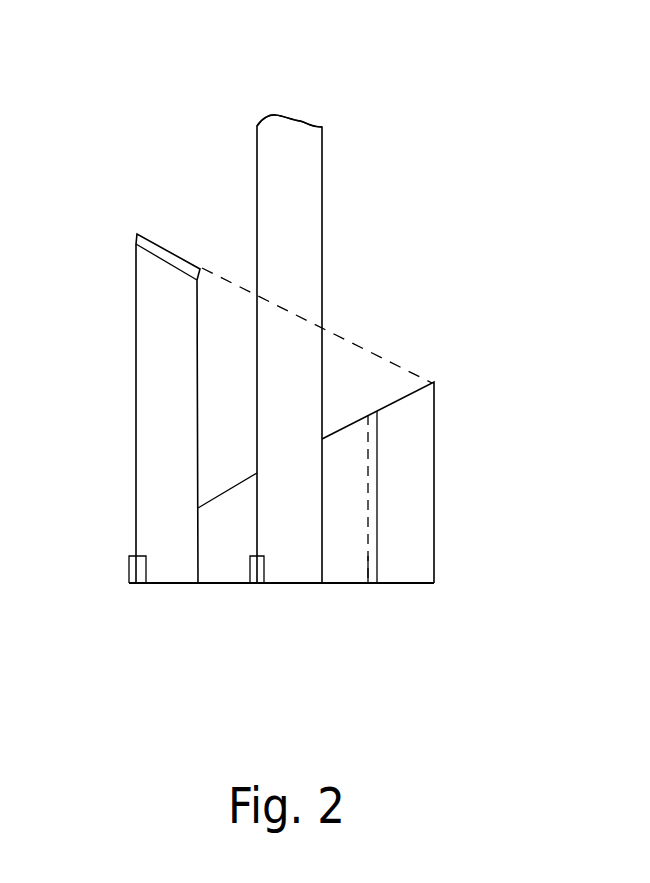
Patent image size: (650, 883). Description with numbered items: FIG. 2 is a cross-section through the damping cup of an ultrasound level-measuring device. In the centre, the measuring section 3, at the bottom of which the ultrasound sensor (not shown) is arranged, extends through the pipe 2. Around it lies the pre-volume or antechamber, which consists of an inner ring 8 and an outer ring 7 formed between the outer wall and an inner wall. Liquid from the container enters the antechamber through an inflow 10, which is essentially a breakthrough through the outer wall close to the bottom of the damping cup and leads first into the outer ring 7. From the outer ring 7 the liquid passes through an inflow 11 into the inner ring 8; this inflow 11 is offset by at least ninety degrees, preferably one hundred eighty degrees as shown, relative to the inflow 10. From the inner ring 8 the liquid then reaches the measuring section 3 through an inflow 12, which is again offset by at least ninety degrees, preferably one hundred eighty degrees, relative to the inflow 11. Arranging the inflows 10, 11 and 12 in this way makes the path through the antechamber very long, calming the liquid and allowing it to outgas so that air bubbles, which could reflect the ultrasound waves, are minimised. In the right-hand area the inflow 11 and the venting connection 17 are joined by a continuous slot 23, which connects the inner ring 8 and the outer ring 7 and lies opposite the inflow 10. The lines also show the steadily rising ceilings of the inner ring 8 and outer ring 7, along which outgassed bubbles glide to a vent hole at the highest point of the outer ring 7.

The pipe 2 is at (310, 200).
The measuring section 3 is at (295, 118).
The outer ring 7 is at (158, 310).
The inner ring 8 is at (222, 572).
The inflow 10 is at (130, 575).
The inflow 11 is at (370, 558).
The inflow 12 is at (252, 583).
The venting connection 17 is at (377, 412).
The continuous slot 23 is at (375, 492).